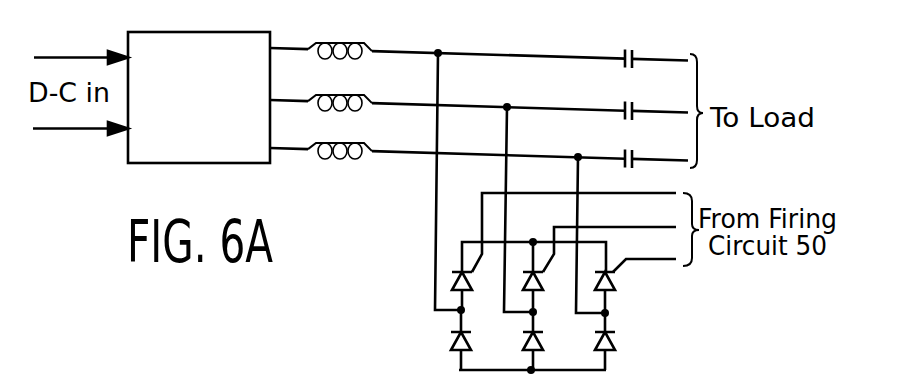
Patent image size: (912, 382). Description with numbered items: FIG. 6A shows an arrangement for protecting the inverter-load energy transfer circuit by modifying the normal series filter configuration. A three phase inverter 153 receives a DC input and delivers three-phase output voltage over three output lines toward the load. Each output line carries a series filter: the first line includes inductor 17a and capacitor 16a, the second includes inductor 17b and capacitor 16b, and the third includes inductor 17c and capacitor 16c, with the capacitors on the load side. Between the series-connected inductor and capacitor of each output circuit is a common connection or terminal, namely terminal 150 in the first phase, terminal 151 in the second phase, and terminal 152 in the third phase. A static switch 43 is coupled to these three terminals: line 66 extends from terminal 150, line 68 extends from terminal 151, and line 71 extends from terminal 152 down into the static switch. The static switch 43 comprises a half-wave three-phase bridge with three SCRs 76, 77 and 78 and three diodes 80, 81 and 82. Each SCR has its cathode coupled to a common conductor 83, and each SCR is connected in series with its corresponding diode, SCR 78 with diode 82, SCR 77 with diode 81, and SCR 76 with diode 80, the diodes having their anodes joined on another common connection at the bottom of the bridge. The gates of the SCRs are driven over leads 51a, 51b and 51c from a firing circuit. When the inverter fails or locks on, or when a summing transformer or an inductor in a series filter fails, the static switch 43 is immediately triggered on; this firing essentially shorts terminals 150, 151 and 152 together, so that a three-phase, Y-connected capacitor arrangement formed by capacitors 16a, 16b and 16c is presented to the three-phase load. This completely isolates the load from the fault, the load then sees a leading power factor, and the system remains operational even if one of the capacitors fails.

The three phase inverter 153 is at (199, 84).
The inductor 17a is at (368, 37).
The inductor 17b is at (366, 92).
The inductor 17c is at (366, 140).
The common connection or terminal 150 is at (438, 52).
The common connection or terminal 151 is at (507, 106).
The common connection or terminal 152 is at (578, 156).
The capacitor 16a is at (637, 50).
The capacitor 16b is at (637, 102).
The capacitor 16c is at (637, 150).
The line 66 is at (433, 180).
The line 68 is at (502, 180).
The line 71 is at (574, 180).
The common conductor 83 is at (516, 241).
The SCR 78 is at (470, 281).
The SCR 77 is at (542, 281).
The SCR 76 is at (616, 287).
The firing circuit lead 51a is at (650, 261).
The firing circuit lead 51b is at (645, 226).
The firing circuit lead 51c is at (636, 196).
The diode 82 is at (451, 338).
The diode 81 is at (523, 338).
The diode 80 is at (595, 338).
The static switch 43 is at (585, 341).